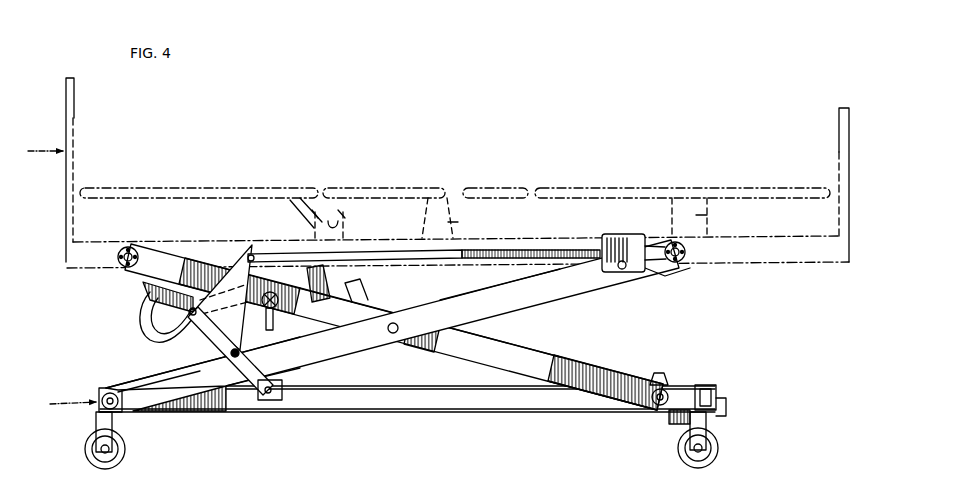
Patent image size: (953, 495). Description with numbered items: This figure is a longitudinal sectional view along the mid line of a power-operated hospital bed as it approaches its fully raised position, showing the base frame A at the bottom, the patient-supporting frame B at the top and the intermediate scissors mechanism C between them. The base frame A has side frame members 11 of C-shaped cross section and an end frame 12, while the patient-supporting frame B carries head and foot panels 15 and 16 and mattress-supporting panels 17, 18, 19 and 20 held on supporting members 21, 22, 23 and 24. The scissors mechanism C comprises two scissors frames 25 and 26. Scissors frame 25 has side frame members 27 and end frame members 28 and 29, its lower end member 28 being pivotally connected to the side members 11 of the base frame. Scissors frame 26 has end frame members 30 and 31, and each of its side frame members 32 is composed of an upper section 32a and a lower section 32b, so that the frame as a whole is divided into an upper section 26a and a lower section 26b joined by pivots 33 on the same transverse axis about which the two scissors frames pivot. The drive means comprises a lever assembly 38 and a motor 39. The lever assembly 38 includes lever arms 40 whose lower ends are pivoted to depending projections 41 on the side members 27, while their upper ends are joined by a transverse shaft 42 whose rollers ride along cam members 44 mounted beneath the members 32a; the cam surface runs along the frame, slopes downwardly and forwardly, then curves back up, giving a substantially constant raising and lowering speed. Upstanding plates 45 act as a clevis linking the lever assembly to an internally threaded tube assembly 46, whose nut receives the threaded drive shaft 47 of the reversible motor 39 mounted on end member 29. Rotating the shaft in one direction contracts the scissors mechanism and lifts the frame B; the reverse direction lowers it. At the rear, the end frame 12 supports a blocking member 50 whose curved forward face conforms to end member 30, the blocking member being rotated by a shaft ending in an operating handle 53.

The side frame member 11 is at (387, 400).
The end frame 12 is at (716, 387).
The head panel 15 is at (75, 104).
The foot panel 16 is at (835, 129).
The mattress-supporting panel 17 is at (237, 188).
The mattress-supporting panel 18 is at (398, 188).
The mattress-supporting panel 19 is at (505, 188).
The mattress-supporting panel 20 is at (624, 188).
The supporting member 21 is at (288, 212).
The supporting member 22 is at (347, 226).
The supporting member 23 is at (456, 228).
The supporting member 24 is at (710, 217).
The scissors frame 25 is at (392, 316).
The scissors frame 26 is at (394, 332).
The upper section 26a is at (299, 340).
The lower section 26b is at (591, 400).
The side frame member 27 is at (492, 300).
The end frame member 28 is at (110, 390).
The end frame member 29 is at (684, 262).
The end frame member 30 is at (655, 406).
The end frame member 31 is at (128, 247).
The side frame member 32 is at (452, 355).
The upper section 32a is at (205, 255).
The lower section 32b is at (507, 368).
The pivot 33 is at (392, 322).
The lever assembly 38 is at (206, 341).
The motor 39 is at (612, 236).
The lever arm 40 is at (238, 369).
The depending projection 41 is at (288, 381).
The transverse shaft 42 is at (191, 303).
The cam member 44 is at (145, 328).
The upstanding plate 45 is at (243, 338).
The internally threaded tube assembly 46 is at (305, 250).
The threaded drive shaft 47 is at (540, 249).
The blocking member 50 is at (675, 425).
The operating handle 53 is at (727, 407).
The base frame A is at (66, 405).
The patient-supporting frame B is at (37, 153).
The scissors mechanism C is at (127, 286).